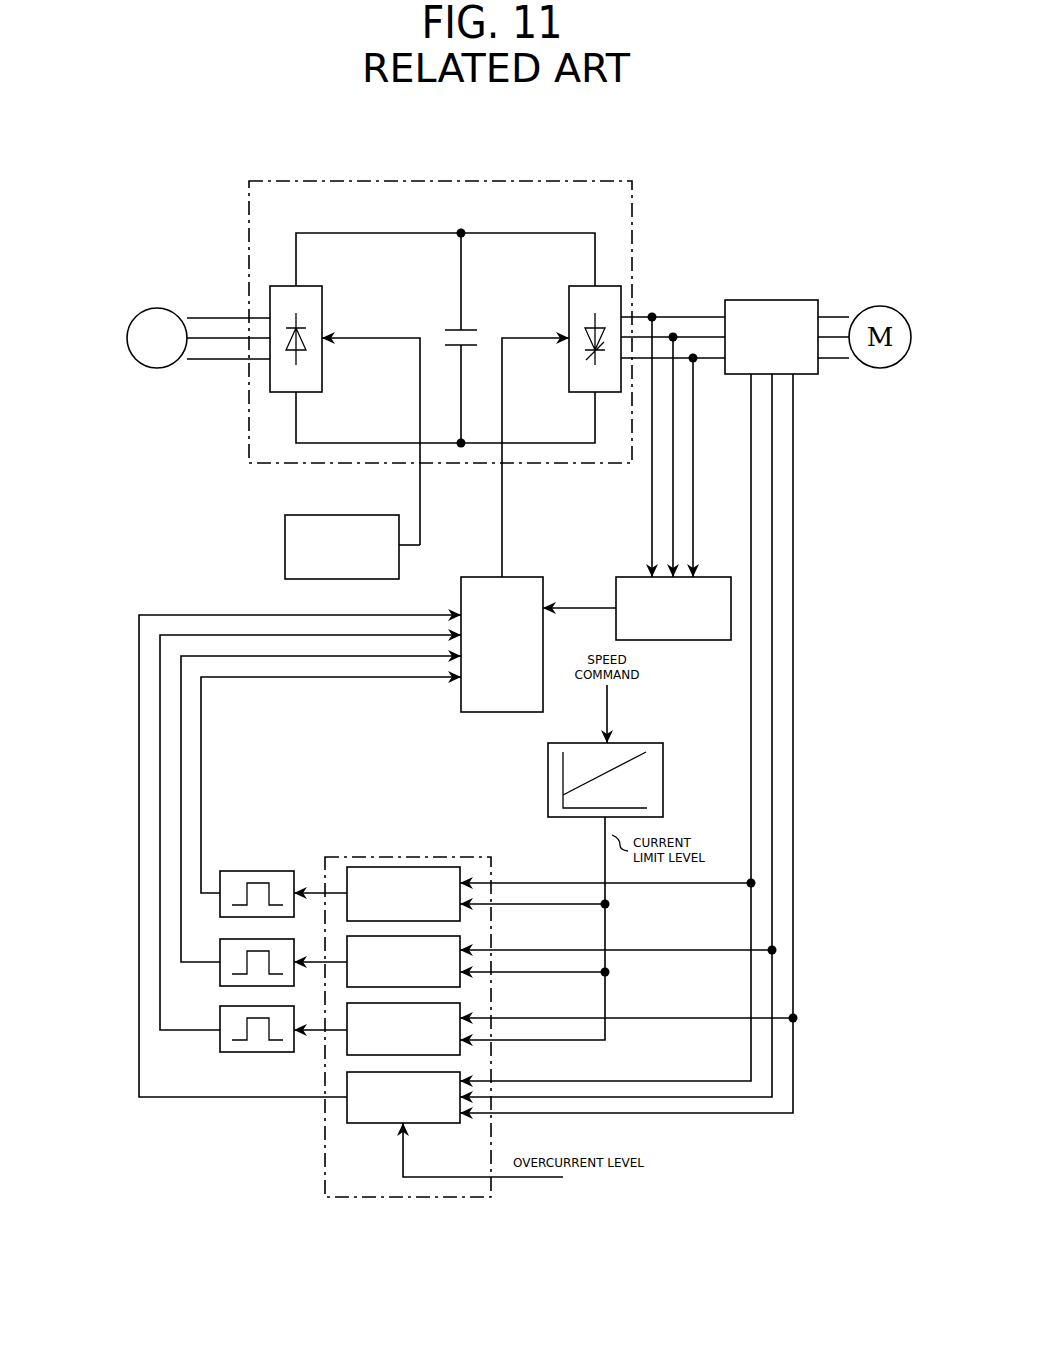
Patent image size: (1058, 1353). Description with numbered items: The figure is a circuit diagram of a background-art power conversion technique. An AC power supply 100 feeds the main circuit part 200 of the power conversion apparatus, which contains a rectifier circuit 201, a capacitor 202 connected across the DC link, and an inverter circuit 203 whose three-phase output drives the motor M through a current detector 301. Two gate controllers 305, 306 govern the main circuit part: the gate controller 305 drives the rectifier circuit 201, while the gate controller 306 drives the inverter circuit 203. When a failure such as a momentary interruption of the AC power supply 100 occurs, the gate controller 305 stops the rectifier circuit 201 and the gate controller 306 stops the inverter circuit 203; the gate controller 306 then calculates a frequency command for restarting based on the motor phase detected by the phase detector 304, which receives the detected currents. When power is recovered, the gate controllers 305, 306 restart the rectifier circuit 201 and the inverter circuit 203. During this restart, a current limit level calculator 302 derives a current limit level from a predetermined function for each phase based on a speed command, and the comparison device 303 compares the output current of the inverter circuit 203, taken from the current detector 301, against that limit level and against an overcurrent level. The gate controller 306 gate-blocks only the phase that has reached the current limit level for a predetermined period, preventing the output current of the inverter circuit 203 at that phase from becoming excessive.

The AC power supply 100 is at (151, 318).
The main circuit part of a power conversion apparatus 200 is at (415, 181).
The rectifier circuit 201 is at (318, 298).
The capacitor 202 is at (450, 324).
The inverter circuit 203 is at (575, 300).
The current detector 301 is at (771, 298).
The current limit level calculator 302 is at (665, 783).
The comparison device 303 is at (407, 857).
The phase detector 304 is at (700, 642).
The gate controller 305 is at (283, 546).
The gate controller 306 is at (470, 714).